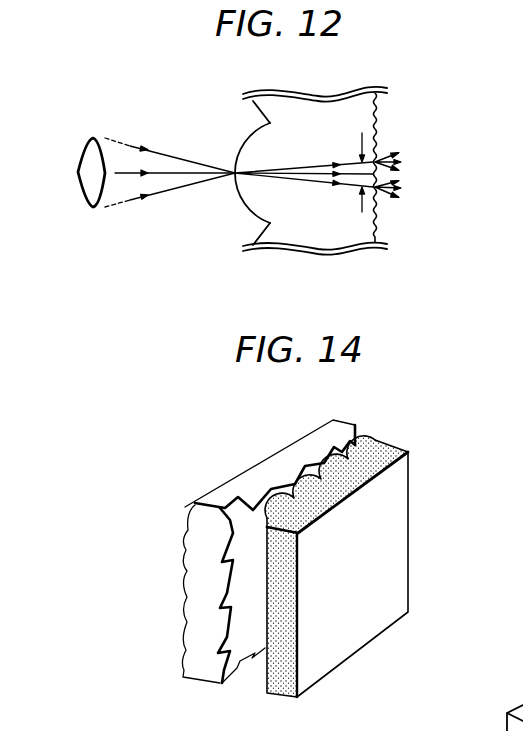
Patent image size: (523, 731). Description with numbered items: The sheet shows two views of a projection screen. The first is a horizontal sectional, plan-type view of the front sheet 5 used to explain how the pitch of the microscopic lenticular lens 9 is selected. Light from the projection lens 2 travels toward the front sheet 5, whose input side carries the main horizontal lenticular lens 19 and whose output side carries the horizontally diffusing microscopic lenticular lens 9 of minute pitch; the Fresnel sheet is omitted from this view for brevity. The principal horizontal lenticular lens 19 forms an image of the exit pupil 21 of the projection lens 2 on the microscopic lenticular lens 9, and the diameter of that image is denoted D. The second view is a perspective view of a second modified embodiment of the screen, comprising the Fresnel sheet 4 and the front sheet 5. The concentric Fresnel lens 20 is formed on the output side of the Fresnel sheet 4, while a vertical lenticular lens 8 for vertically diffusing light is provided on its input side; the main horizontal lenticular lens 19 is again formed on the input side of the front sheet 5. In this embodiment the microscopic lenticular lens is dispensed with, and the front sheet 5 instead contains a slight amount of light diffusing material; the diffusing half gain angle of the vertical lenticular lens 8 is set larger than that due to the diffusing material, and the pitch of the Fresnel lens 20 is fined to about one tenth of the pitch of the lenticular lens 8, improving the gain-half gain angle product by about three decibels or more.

In FIG. 12, the projection lens 2 is at (91, 163).
In FIG. 12, the exit pupil 21 is at (165, 185).
In FIG. 12, the front sheet 5 is at (321, 104).
In FIG. 14, the front sheet 5 is at (384, 452).
In FIG. 12, the main horizontal lenticular lens 19 is at (246, 148).
In FIG. 14, the main horizontal lenticular lens 19 is at (368, 440).
In FIG. 12, the microscopic lenticular lens 9 is at (377, 123).
In FIG. 12, the diameter of the exit pupil image D is at (366, 163).
In FIG. 14, the Fresnel sheet 4 is at (308, 438).
In FIG. 14, the vertical lenticular lens 8 is at (183, 546).
In FIG. 14, the Fresnel lens 20 is at (243, 602).